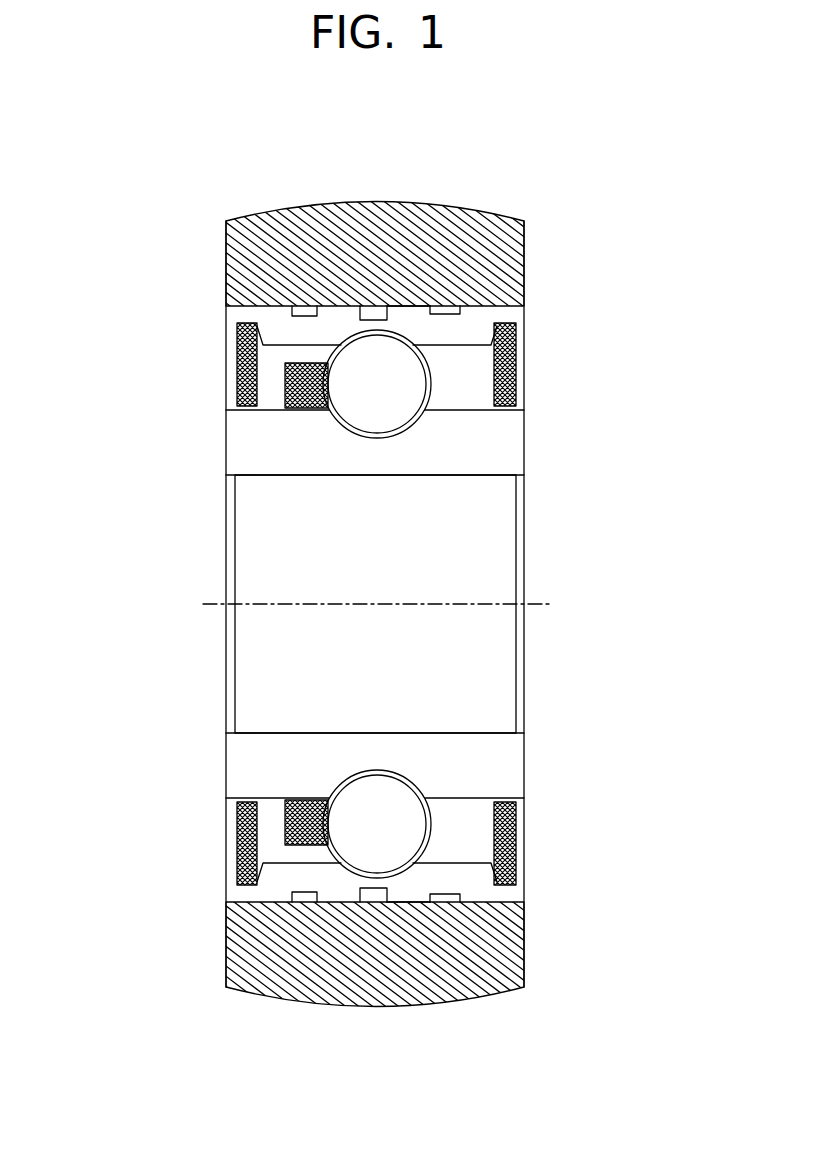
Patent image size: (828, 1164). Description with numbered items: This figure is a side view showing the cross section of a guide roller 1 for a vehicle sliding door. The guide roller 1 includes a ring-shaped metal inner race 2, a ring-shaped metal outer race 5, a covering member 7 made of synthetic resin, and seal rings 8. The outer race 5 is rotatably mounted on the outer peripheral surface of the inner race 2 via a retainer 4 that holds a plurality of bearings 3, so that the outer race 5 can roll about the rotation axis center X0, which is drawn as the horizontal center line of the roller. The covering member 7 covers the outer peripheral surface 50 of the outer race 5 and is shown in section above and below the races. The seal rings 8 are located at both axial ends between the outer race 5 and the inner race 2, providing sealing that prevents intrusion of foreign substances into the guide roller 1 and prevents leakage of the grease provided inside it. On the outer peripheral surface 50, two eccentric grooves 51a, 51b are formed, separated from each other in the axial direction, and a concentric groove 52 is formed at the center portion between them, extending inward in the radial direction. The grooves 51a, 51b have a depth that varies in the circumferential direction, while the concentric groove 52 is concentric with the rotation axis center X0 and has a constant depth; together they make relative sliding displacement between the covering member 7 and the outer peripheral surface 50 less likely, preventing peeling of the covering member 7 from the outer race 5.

The guide roller 1 is at (518, 209).
The inner race 2 is at (500, 457).
The bearings 3 is at (405, 396).
The retainer 4 is at (284, 406).
The outer race 5 is at (465, 327).
The covering member 7 is at (498, 270).
The seal rings 8 is at (240, 359).
The outer peripheral surface 50 is at (408, 306).
The eccentric groove 51a is at (450, 312).
The eccentric groove 51b is at (302, 308).
The concentric groove 52 is at (375, 318).
The rotation axis center X0 is at (531, 604).